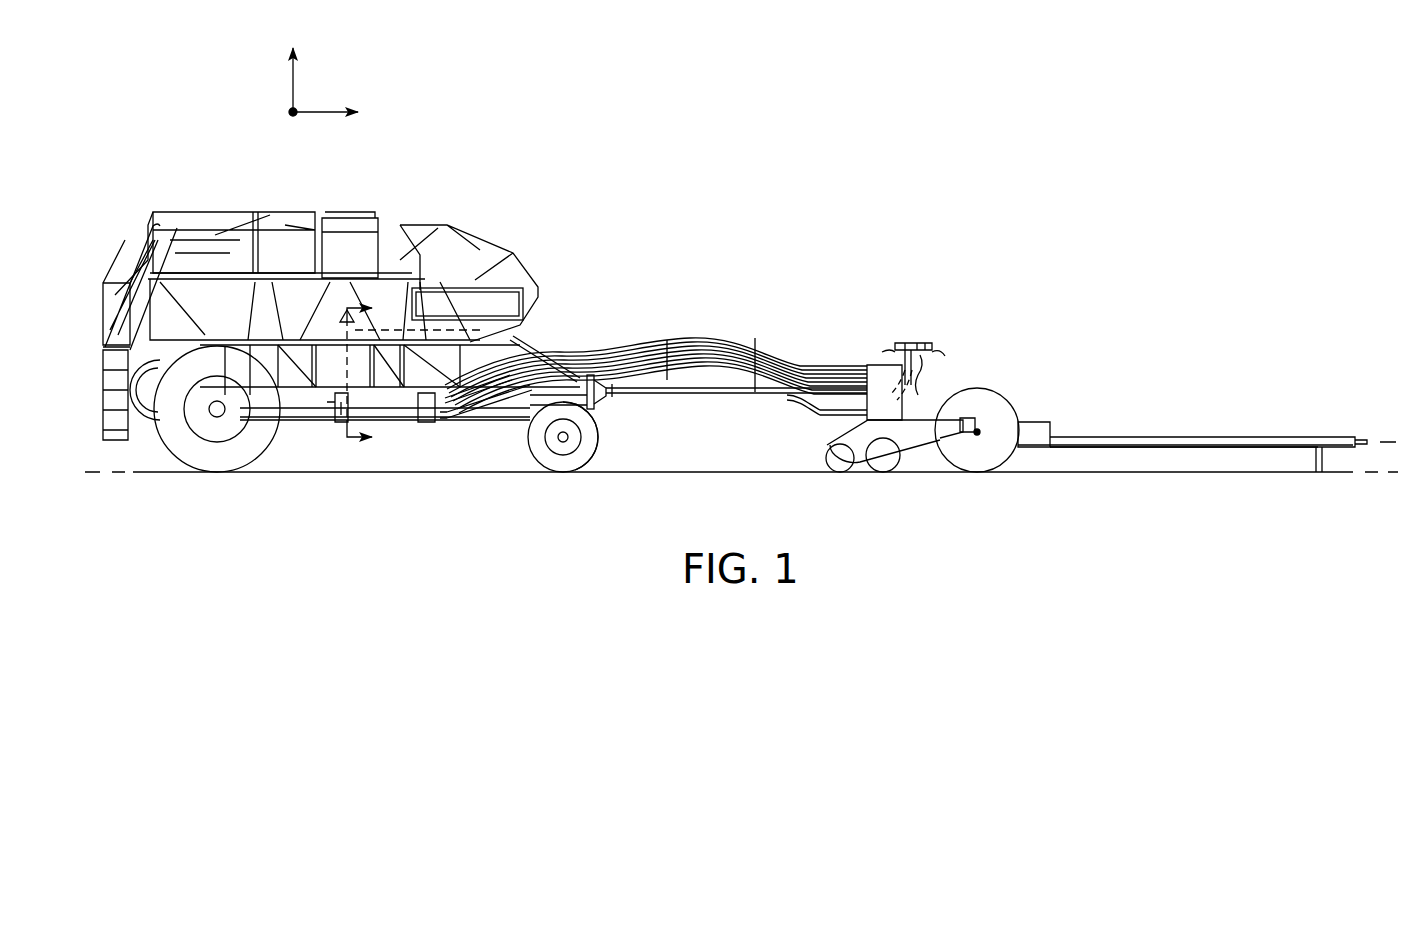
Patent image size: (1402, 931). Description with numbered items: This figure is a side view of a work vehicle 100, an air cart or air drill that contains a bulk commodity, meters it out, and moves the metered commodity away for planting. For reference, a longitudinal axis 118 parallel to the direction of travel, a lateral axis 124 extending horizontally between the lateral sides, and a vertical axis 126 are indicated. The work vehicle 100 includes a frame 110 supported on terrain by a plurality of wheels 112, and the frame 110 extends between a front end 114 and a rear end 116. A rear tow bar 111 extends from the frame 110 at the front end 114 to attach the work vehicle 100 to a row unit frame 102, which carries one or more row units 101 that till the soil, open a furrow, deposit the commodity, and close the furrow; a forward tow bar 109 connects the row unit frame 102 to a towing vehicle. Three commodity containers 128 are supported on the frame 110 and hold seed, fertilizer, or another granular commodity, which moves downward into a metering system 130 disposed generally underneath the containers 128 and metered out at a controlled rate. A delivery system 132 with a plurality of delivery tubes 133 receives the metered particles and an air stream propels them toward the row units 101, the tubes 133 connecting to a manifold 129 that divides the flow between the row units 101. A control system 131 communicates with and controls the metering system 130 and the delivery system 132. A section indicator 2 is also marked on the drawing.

The work vehicle 100 is at (200, 176).
The row unit 101 is at (1020, 383).
The row unit frame 102 is at (940, 412).
The forward tow bar 109 is at (1147, 442).
The frame 110 is at (522, 350).
The rear tow bar 111 is at (720, 394).
The wheels 112 is at (222, 462).
The front end 114 is at (598, 378).
The rear end 116 is at (100, 333).
The longitudinal axis 118 is at (325, 115).
The lateral axis 124 is at (291, 110).
The vertical axis 126 is at (294, 80).
The commodity containers 128 is at (247, 253).
The manifold 129 is at (907, 325).
The metering system 130 is at (363, 403).
The control system 131 is at (523, 305).
The delivery system 132 is at (465, 425).
The delivery tubes 133 is at (502, 404).
The section line for FIG. 2 is at (412, 374).